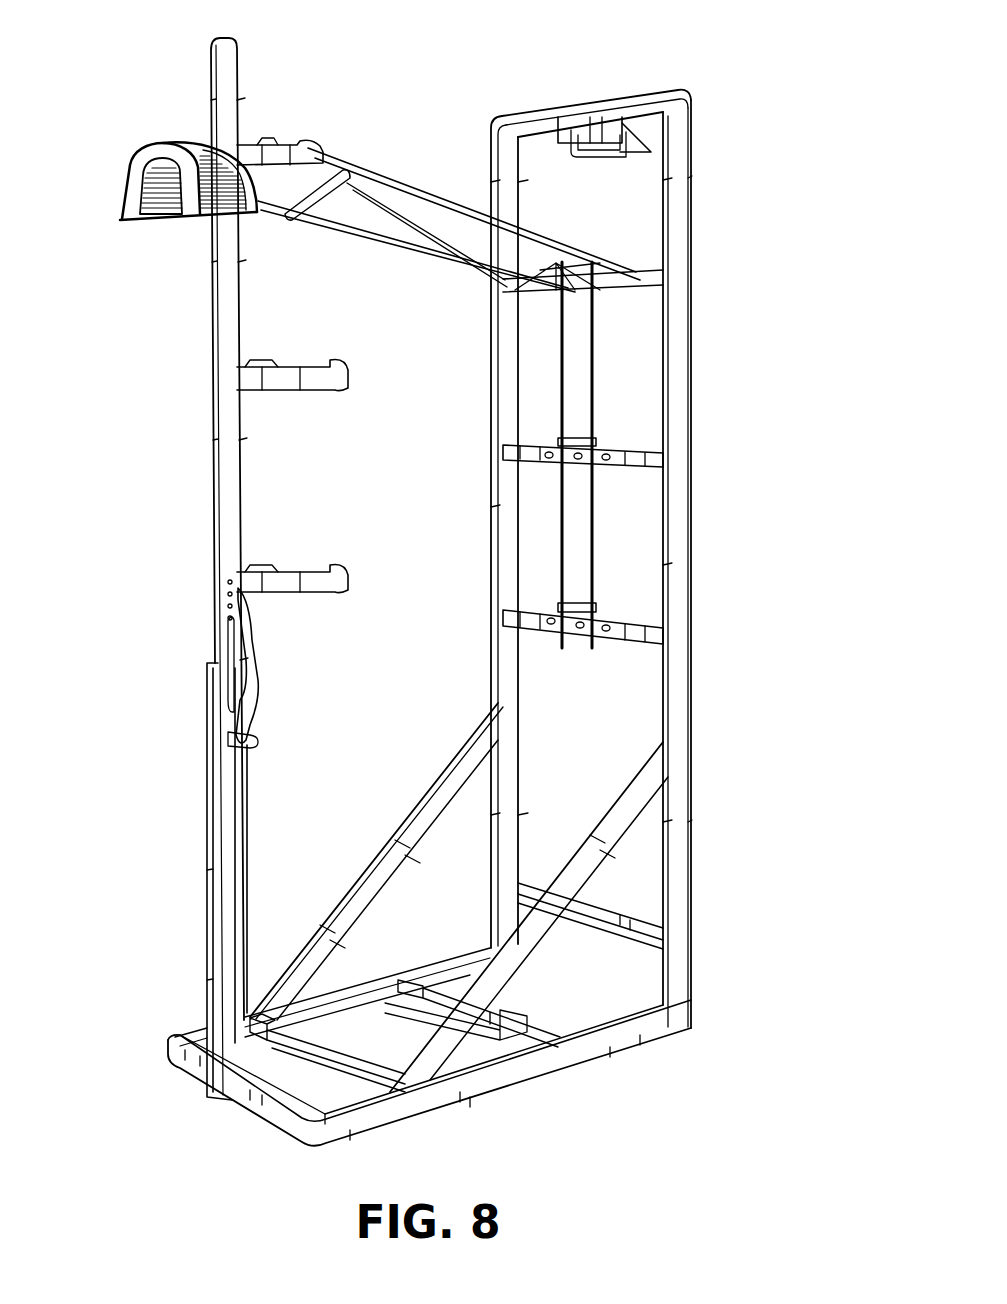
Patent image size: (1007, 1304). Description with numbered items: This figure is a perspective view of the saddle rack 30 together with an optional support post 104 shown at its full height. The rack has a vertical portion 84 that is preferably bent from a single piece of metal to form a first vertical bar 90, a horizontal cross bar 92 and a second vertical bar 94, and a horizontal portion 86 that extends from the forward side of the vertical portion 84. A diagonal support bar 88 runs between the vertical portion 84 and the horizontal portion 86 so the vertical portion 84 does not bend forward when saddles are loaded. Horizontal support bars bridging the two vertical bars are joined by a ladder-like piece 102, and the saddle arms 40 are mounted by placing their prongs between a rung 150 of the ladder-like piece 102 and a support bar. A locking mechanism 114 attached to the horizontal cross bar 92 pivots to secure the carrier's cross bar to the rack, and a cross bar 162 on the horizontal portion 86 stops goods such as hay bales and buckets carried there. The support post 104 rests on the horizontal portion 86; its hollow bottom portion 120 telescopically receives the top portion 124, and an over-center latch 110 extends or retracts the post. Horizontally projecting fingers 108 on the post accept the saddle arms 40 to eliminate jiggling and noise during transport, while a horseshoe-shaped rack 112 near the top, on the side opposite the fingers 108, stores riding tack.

The saddle rack 30 is at (746, 73).
The saddle arms 40 is at (357, 186).
The vertical portion 84 is at (695, 352).
The horizontal portion 86 is at (565, 1062).
The diagonal support bar 88 is at (432, 790).
The first vertical bar 90 is at (695, 598).
The horizontal cross bar 92 is at (524, 120).
The second vertical bar 94 is at (494, 392).
The ladder-like piece 102 is at (560, 342).
The support post 104 is at (212, 466).
The horizontally projecting fingers 108 is at (320, 390).
The over-center latch 110 is at (262, 690).
The horseshoe-shaped rack 112 is at (150, 156).
The locking mechanism 114 is at (612, 160).
The bottom portion 120 is at (250, 844).
The top portion 124 is at (212, 325).
The rung 150 is at (588, 264).
The cross bar 162 is at (640, 932).